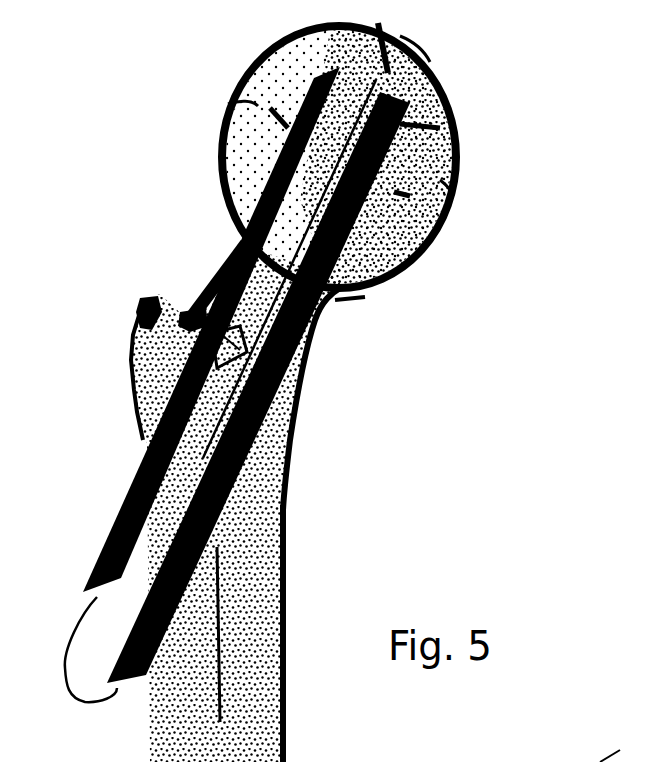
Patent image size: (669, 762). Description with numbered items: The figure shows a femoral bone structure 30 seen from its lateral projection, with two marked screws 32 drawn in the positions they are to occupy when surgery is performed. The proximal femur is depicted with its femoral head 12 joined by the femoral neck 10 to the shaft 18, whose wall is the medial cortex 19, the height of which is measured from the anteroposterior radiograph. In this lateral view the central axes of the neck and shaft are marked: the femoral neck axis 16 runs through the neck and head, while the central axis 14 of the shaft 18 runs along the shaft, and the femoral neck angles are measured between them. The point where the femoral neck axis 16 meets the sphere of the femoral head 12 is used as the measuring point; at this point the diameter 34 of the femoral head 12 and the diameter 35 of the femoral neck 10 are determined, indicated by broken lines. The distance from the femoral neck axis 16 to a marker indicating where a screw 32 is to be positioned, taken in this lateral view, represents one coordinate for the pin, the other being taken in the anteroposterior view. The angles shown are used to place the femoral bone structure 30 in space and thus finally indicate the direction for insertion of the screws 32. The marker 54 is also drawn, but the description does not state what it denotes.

The femoral neck 10 is at (327, 327).
The femoral head 12 is at (450, 167).
The central axis of the shaft 14 is at (213, 664).
The femoral neck axis 16 is at (426, 64).
The shaft 18 is at (286, 544).
The medial cortex 19 is at (310, 375).
The femoral bone structure 30 is at (492, 302).
The screws 32 is at (65, 693).
The diameter of the femoral head 34 is at (452, 192).
The diameter of the femoral neck 35 is at (340, 301).
The marker line 54 is at (254, 63).